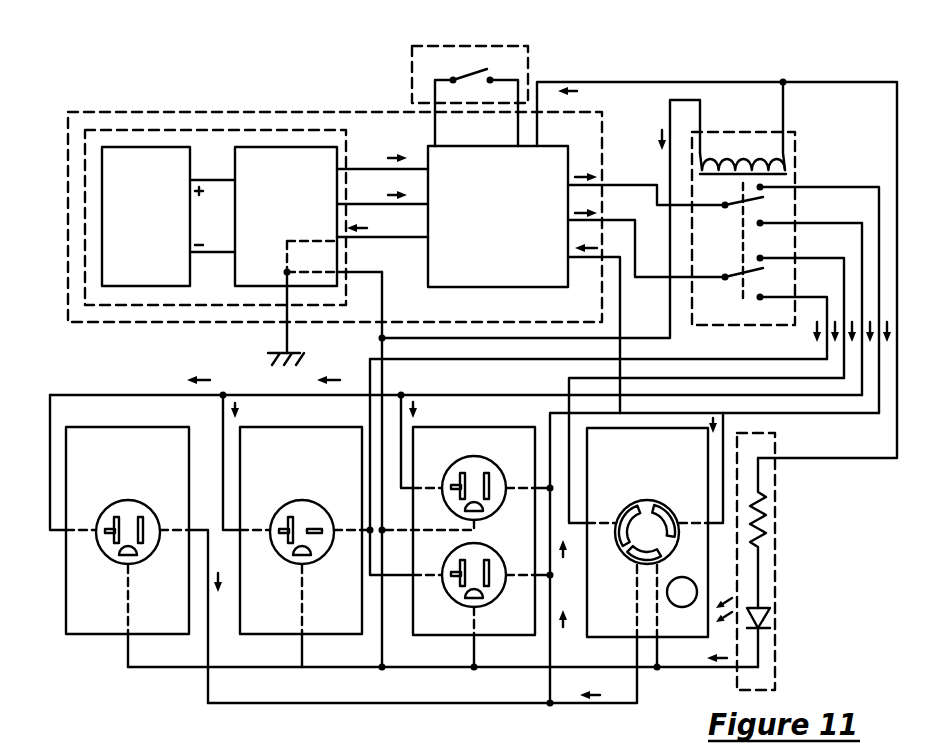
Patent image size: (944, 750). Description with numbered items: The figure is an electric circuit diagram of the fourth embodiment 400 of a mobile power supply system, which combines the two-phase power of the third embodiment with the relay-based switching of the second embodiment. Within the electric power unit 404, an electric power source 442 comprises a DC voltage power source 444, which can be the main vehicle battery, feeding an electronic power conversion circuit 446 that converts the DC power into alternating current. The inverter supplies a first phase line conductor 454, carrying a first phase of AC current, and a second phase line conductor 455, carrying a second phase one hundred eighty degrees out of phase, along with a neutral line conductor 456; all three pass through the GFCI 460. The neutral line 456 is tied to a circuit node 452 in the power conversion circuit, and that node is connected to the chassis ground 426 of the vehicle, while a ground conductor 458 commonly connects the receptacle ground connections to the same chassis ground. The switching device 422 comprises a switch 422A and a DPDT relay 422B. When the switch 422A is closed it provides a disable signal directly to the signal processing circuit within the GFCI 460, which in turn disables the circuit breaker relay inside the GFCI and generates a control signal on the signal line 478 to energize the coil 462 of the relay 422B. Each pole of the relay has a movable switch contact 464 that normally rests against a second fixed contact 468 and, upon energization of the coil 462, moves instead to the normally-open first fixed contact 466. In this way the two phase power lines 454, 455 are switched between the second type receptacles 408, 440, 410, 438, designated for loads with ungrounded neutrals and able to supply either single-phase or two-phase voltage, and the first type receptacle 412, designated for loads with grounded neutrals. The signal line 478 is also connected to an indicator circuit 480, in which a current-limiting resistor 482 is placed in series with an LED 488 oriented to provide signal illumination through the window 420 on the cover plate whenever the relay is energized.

The fourth embodiment of mobile power supply system 400 is at (143, 96).
The electric power unit 404 is at (272, 110).
The electric power source 442 is at (234, 130).
The DC voltage power source 444 is at (172, 147).
The electronic power conversion circuit 446 is at (322, 147).
The circuit node 452 is at (285, 255).
The chassis ground 426 is at (273, 351).
The GFCI 460 is at (442, 146).
The first phase line conductor 454 is at (412, 167).
The second phase line conductor 455 is at (415, 203).
The neutral line conductor 456 is at (406, 262).
The ground conductor 458 is at (383, 305).
The switching device 422 is at (412, 77).
The switch 422A is at (518, 45).
The DPDT relay 422B is at (744, 143).
The relay coil 462 is at (788, 155).
The movable switch contact 464 is at (731, 212).
The first fixed contact 466 is at (765, 199).
The second fixed contact 468 is at (765, 226).
The signal line 478 is at (614, 82).
The second type receptacle 408 is at (126, 500).
The second type receptacle 440 is at (301, 500).
The second type receptacle 410 is at (474, 456).
The second type receptacle 438 is at (498, 553).
The first type receptacle 412 is at (645, 500).
The window 420 is at (682, 607).
The indicator circuit 480 is at (776, 575).
The current-limiting resistor 482 is at (774, 513).
The LED 488 is at (769, 620).